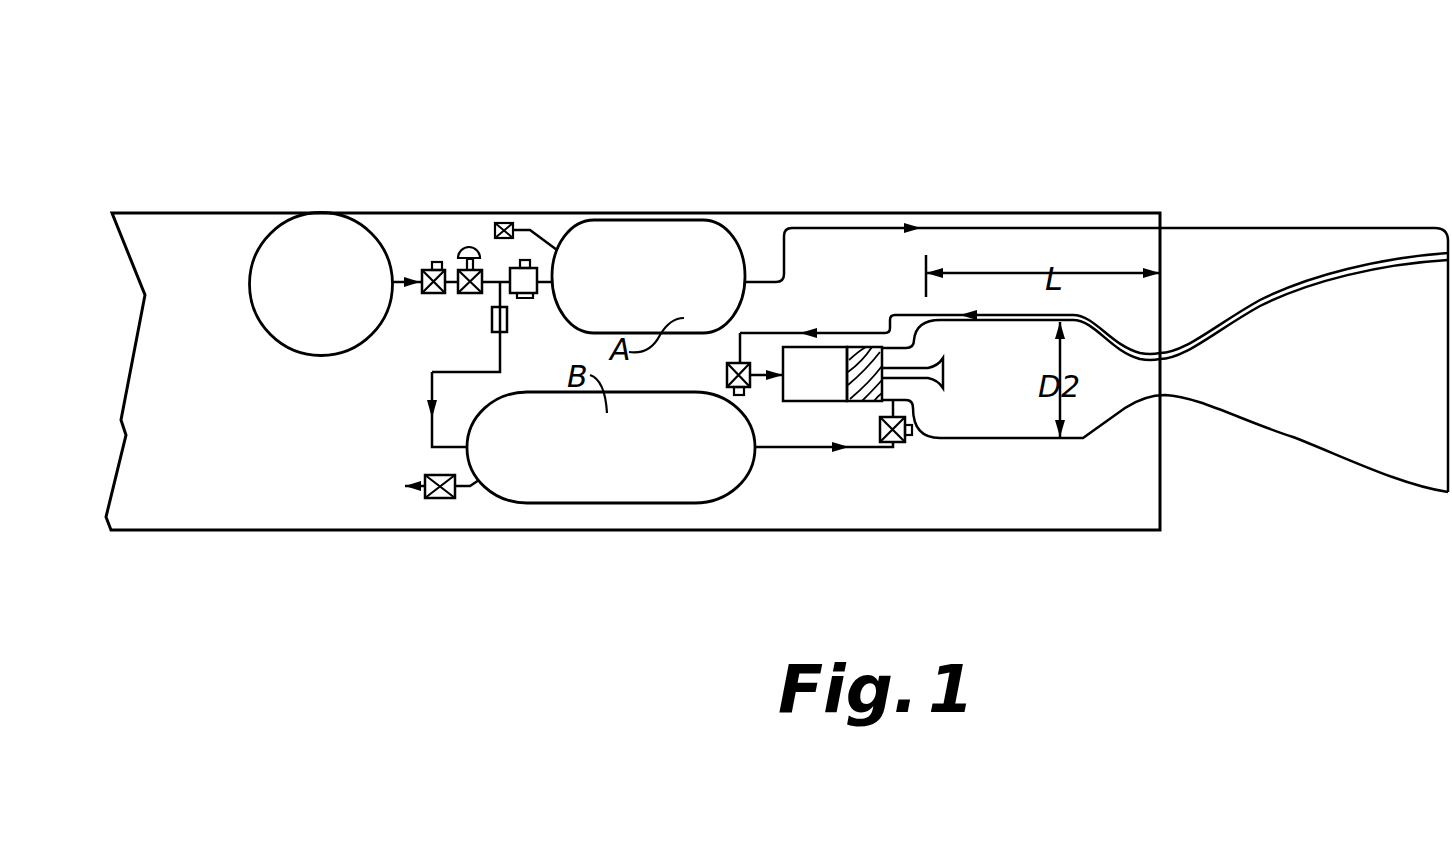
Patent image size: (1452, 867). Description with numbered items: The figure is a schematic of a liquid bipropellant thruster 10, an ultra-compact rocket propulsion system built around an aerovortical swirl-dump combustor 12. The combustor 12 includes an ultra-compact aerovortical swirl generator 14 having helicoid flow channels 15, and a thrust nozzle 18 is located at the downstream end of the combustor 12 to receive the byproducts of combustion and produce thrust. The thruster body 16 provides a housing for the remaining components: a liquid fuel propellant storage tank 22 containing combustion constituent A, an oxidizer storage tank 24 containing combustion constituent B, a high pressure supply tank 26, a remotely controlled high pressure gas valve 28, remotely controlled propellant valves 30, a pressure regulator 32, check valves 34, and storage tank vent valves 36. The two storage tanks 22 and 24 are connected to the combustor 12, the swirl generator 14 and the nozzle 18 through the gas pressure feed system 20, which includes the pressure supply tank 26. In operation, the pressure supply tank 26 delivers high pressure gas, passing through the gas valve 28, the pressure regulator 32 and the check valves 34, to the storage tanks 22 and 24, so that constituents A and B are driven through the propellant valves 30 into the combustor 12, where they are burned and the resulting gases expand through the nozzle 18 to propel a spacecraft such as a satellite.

The liquid bipropellant thruster 10 is at (234, 124).
The aerovortical swirl-dump combustor 12 is at (950, 457).
The aerovortical swirl generator 14 is at (822, 393).
The helicoid flow channels 15 is at (857, 402).
The thruster body 16 is at (905, 213).
The thrust nozzle 18 is at (1298, 310).
The gas pressure feed system 20 is at (394, 392).
The liquid fuel propellant storage tank 22 is at (668, 284).
The oxidizer storage tank 24 is at (632, 459).
The high pressure supply tank 26 is at (320, 294).
The high pressure gas valve 28 is at (434, 262).
The propellant valves 30 is at (727, 375).
The pressure regulator 32 is at (470, 295).
The check valves 34 is at (525, 295).
The storage tank vent valves 36 is at (495, 230).